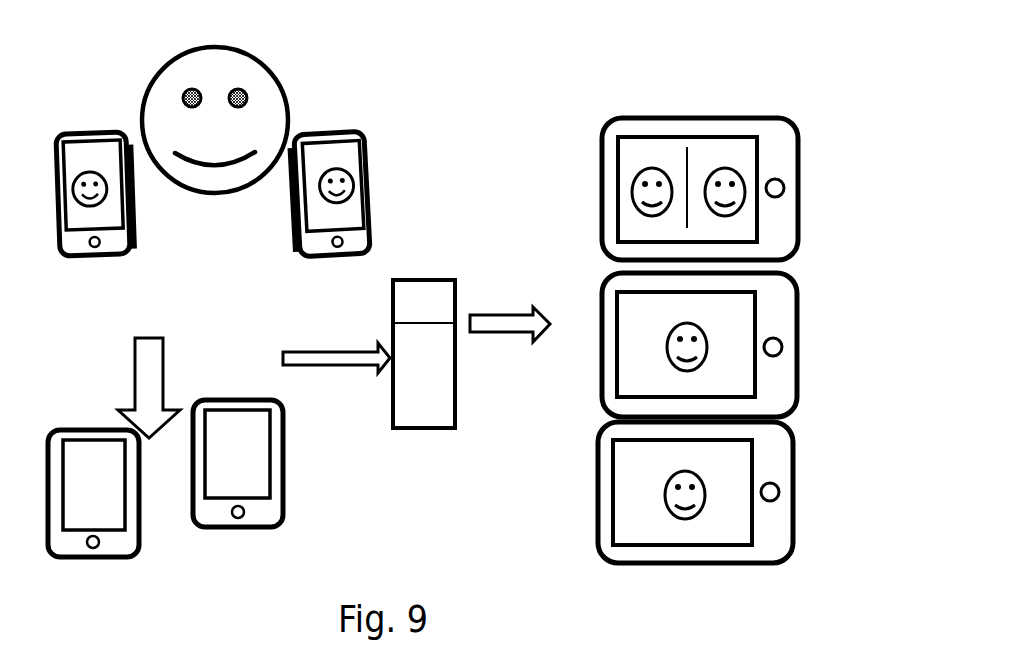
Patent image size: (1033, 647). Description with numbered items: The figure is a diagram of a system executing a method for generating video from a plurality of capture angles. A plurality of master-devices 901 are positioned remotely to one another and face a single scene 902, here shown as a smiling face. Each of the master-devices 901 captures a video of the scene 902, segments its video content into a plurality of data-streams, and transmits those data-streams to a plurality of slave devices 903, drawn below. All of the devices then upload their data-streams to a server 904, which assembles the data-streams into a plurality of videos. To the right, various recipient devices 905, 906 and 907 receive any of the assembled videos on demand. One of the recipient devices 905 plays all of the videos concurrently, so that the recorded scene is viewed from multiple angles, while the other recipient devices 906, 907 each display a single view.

The master-devices 901 is at (290, 243).
The scene 902 is at (277, 78).
The slave devices 903 is at (145, 523).
The server 904 is at (424, 278).
The recipient device 905 is at (593, 137).
The recipient device 906 is at (803, 332).
The recipient device 907 is at (823, 500).